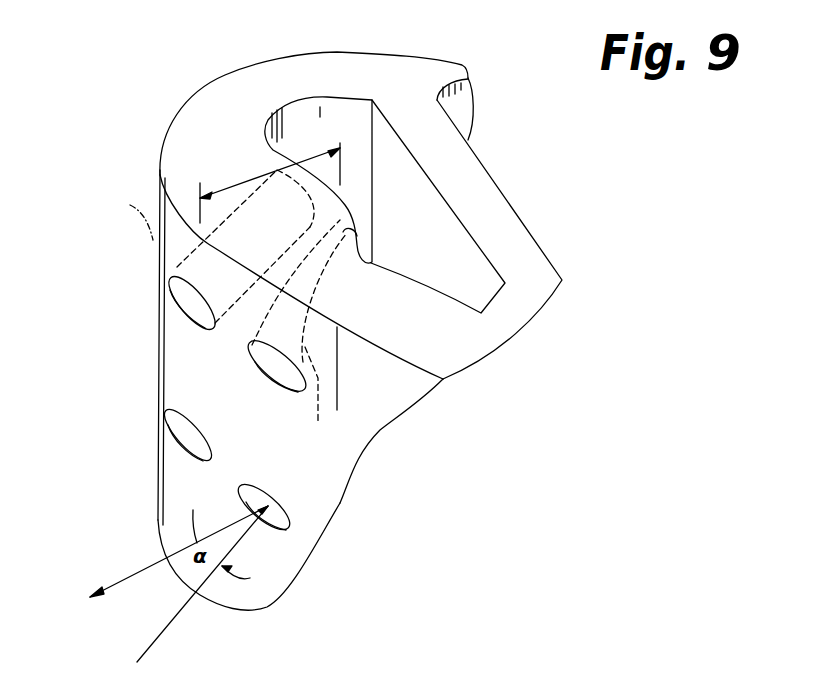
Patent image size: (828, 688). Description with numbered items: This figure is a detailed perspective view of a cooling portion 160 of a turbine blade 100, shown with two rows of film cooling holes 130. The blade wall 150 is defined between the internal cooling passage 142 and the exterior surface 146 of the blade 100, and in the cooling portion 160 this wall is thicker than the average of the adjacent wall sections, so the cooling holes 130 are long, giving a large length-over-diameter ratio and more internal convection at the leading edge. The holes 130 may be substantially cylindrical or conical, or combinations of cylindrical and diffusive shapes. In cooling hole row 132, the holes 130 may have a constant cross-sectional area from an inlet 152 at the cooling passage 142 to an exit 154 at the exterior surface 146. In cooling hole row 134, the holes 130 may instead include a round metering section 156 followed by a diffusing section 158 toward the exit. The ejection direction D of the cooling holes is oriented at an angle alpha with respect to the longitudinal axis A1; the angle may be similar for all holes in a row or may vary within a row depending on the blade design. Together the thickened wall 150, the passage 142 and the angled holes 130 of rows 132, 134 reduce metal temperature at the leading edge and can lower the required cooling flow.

The turbine blade 100 is at (647, 687).
The film cooling holes 130 is at (163, 280).
The cooling row 132 is at (163, 424).
The cooling row 134 is at (250, 498).
The cooling passage 142 is at (283, 110).
The exterior surface 146 is at (337, 51).
The blade wall 150 is at (268, 178).
The inlet 152 is at (350, 190).
The exit 154 is at (123, 211).
The round metering section 156 is at (365, 241).
The diffusing section 158 is at (317, 404).
The cooling portion 160 is at (103, 325).
The ejection direction D is at (161, 562).
The longitudinal axis A1 is at (183, 596).